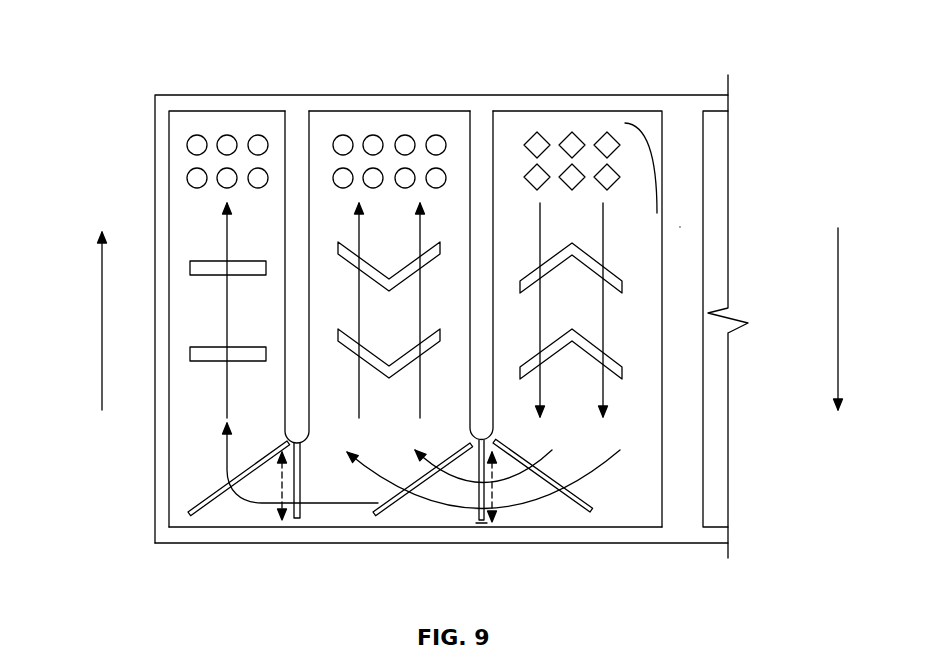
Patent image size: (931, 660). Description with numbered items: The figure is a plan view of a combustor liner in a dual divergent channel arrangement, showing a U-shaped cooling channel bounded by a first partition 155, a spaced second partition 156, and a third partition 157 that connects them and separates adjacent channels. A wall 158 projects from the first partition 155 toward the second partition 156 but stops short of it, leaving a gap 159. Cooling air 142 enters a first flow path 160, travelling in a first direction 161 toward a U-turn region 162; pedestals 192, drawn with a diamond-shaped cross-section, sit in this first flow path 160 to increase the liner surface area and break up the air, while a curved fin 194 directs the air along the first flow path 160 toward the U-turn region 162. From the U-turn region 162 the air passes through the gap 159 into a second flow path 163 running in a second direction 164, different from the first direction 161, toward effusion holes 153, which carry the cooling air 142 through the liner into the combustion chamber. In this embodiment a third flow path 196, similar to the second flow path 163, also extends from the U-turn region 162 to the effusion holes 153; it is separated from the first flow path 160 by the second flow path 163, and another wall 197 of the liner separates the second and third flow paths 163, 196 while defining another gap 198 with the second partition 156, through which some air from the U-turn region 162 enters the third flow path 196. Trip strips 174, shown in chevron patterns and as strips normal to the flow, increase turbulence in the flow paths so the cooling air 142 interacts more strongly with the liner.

The cooling air 142 is at (580, 473).
The effusion holes 153 is at (195, 143).
The first partition 155 is at (620, 105).
The second partition 156 is at (650, 532).
The third partition 157 is at (680, 227).
The wall 158 is at (480, 145).
The gap 159 is at (484, 488).
The first flow path 160 is at (618, 352).
The first direction 161 is at (838, 320).
The U-turn region 162 is at (470, 517).
The second flow path 163 is at (339, 398).
The second direction 164 is at (100, 320).
The trip strips 174 is at (205, 497).
The pedestals 192 is at (537, 143).
The curved fin 194 is at (650, 134).
The third flow path 196 is at (212, 235).
The wall 197 is at (297, 145).
The gap 198 is at (282, 490).